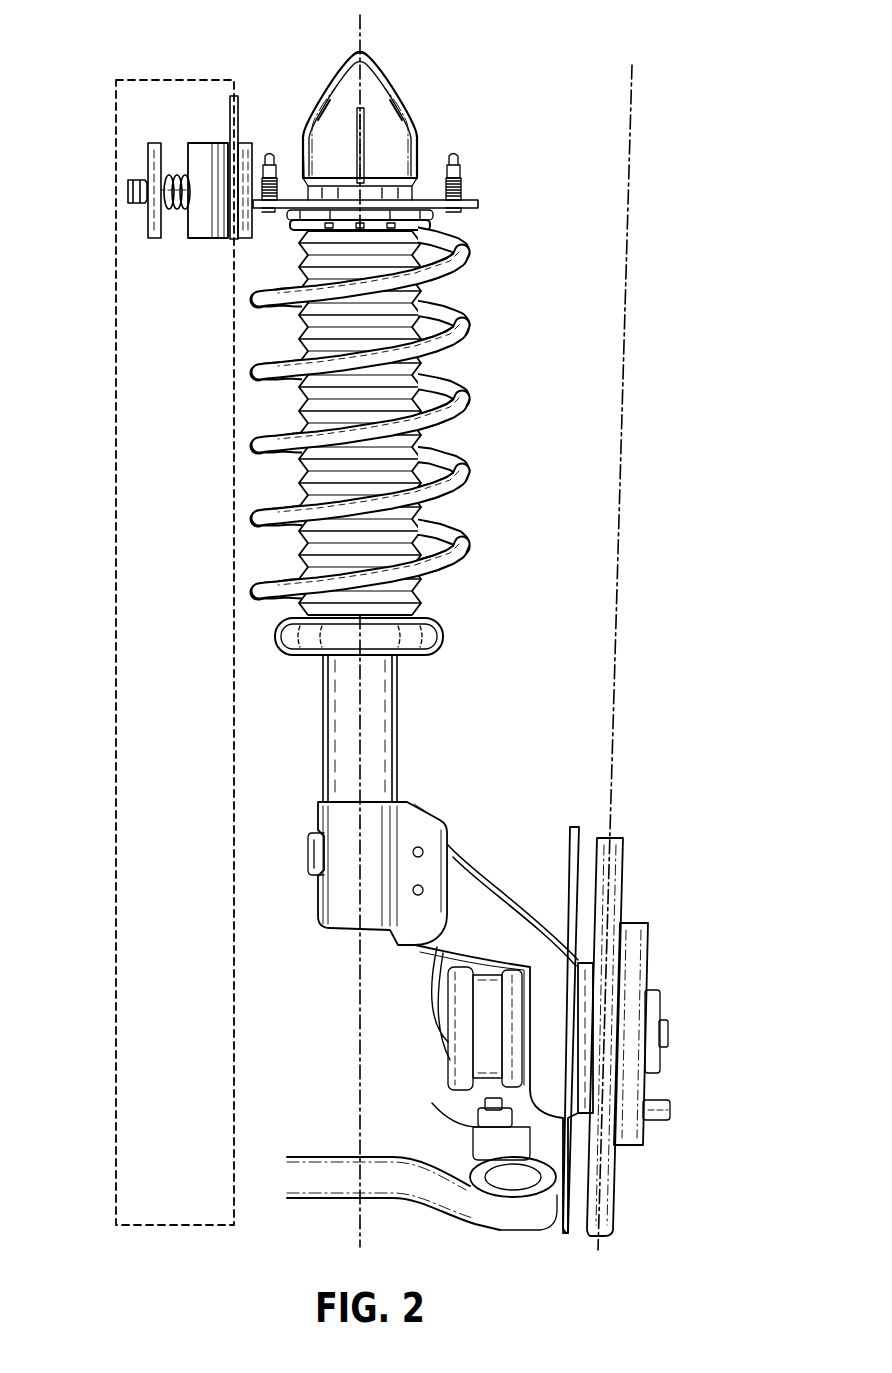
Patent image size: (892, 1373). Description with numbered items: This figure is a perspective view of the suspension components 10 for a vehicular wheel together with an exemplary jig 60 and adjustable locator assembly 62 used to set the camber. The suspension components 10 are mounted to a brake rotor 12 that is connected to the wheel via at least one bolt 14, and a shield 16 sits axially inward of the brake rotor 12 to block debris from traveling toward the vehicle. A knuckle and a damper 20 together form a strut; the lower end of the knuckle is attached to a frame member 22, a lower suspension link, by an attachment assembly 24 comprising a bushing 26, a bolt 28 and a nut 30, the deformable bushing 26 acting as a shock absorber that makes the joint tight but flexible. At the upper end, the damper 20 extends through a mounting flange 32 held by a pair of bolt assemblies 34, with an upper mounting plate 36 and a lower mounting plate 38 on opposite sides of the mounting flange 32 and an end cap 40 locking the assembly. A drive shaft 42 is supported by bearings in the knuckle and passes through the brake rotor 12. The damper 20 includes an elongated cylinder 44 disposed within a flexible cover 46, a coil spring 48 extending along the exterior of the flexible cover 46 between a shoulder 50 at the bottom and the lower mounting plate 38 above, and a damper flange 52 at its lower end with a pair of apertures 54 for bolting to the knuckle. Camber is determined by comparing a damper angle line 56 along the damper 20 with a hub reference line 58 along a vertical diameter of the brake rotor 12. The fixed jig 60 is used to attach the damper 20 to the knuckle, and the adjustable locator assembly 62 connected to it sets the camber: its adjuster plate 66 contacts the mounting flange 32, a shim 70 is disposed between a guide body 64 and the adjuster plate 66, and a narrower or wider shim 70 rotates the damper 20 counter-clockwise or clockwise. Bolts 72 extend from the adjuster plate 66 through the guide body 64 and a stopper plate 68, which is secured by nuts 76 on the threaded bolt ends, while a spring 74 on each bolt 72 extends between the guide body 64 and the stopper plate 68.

The suspension components 10 is at (533, 92).
The brake rotor 12 is at (636, 922).
The bolt 14 is at (672, 1110).
The shield 16 is at (574, 826).
The damper 20 is at (286, 712).
The frame member 22 is at (330, 1186).
The attachment assembly 24 is at (470, 1170).
The bushing 26 is at (556, 1185).
The bolt 28 is at (486, 1102).
The nut 30 is at (478, 1128).
The mounting flange 32 is at (476, 204).
The bolt assemblies 34 is at (270, 152).
The upper mounting plate 36 is at (418, 192).
The lower mounting plate 38 is at (435, 226).
The end cap 40 is at (405, 96).
The drive shaft 42 is at (456, 1052).
The cylinder 44 is at (321, 744).
The flexible cover 46 is at (262, 512).
The spring 48 is at (466, 398).
The shoulder 50 is at (446, 636).
The damper flange 52 is at (316, 818).
The apertures 54 is at (418, 846).
The damper angle line 56 is at (362, 38).
The hub reference line 58 is at (616, 528).
The jig 60 is at (116, 838).
The adjustable locator assembly 62 is at (98, 182).
The guide body 64 is at (210, 143).
The adjuster plate 66 is at (247, 143).
The stopper plate 68 is at (152, 143).
The shim 70 is at (236, 98).
The bolts 72 is at (184, 210).
The spring 74 is at (177, 178).
The nuts 76 is at (133, 205).